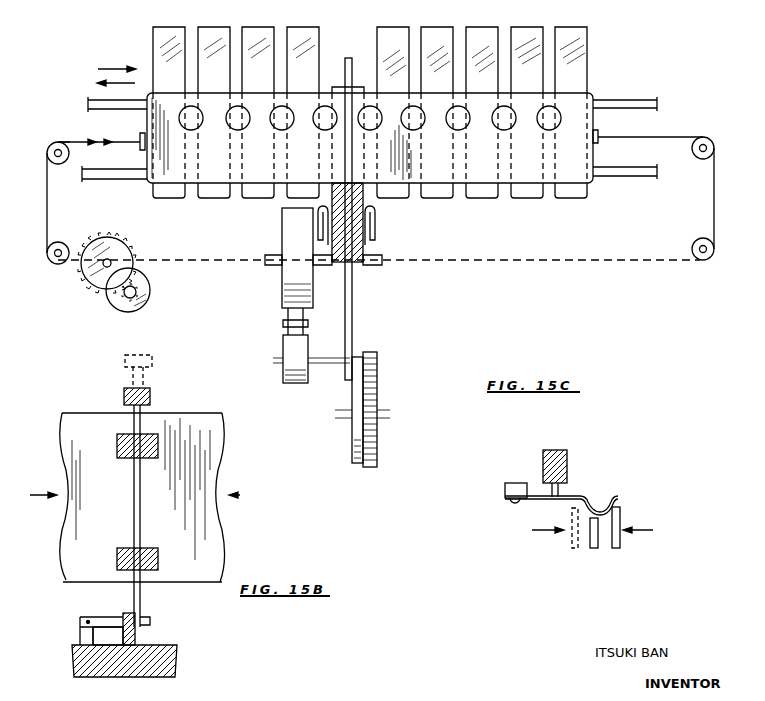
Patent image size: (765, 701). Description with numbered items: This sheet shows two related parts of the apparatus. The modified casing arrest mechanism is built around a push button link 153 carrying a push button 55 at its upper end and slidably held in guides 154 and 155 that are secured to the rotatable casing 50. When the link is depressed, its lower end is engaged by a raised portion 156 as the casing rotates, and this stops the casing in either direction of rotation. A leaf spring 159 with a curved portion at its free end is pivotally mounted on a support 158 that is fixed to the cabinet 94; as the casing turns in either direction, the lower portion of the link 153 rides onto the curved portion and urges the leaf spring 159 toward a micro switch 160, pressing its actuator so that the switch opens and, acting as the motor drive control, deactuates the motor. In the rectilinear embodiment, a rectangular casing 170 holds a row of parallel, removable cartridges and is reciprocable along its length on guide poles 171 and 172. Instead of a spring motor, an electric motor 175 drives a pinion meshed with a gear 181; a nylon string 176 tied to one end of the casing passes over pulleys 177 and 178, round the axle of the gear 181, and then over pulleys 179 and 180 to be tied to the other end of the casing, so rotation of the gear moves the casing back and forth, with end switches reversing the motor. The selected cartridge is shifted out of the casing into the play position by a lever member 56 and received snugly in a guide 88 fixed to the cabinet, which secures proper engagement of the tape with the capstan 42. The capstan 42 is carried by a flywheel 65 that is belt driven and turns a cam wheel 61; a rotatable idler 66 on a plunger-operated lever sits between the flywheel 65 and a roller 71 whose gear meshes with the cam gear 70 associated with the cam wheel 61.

In FIG. 15C, the guide pole 171 is at (622, 101).
In FIG. 15C, the guide pole 172 is at (625, 177).
In FIG. 15C, the casing 170 is at (553, 199).
In FIG. 15C, the nylon string 176 is at (78, 135).
In FIG. 15C, the pulley 177 is at (63, 165).
In FIG. 15C, the pulley 178 is at (62, 247).
In FIG. 15C, the pulley 179 is at (702, 261).
In FIG. 15C, the pulley 180 is at (693, 149).
In FIG. 15C, the gear 181 is at (83, 280).
In FIG. 15C, the electric motor 175 is at (127, 313).
In FIG. 15C, the lever member 56 is at (352, 175).
In FIG. 15C, the guide 88 is at (380, 240).
In FIG. 15C, the capstan 42 is at (377, 268).
In FIG. 15C, the flywheel 65 is at (282, 298).
In FIG. 15C, the rotatable idler 66 is at (288, 330).
In FIG. 15C, the roller 71 is at (283, 376).
In FIG. 15C, the cam gear 70 is at (377, 371).
In FIG. 15C, the cam wheel 61 is at (352, 433).
In FIG. 15B, the push button 55 is at (151, 391).
In FIG. 15B, the casing 50 is at (208, 413).
In FIG. 15B, the push button link 153 is at (137, 515).
In FIG. 16B, the push button link 153 is at (622, 510).
In FIG. 15B, the guide 154 is at (130, 452).
In FIG. 15B, the guide 155 is at (118, 550).
In FIG. 15B, the raised portion 156 is at (137, 635).
In FIG. 16B, the raised portion 156 is at (592, 550).
In FIG. 15B, the support 158 is at (92, 635).
In FIG. 16B, the support 158 is at (505, 488).
In FIG. 15B, the leaf spring 159 is at (108, 618).
In FIG. 16B, the leaf spring 159 is at (587, 495).
In FIG. 15B, the cabinet 94 is at (175, 655).
In FIG. 16B, the micro switch 160 is at (567, 455).